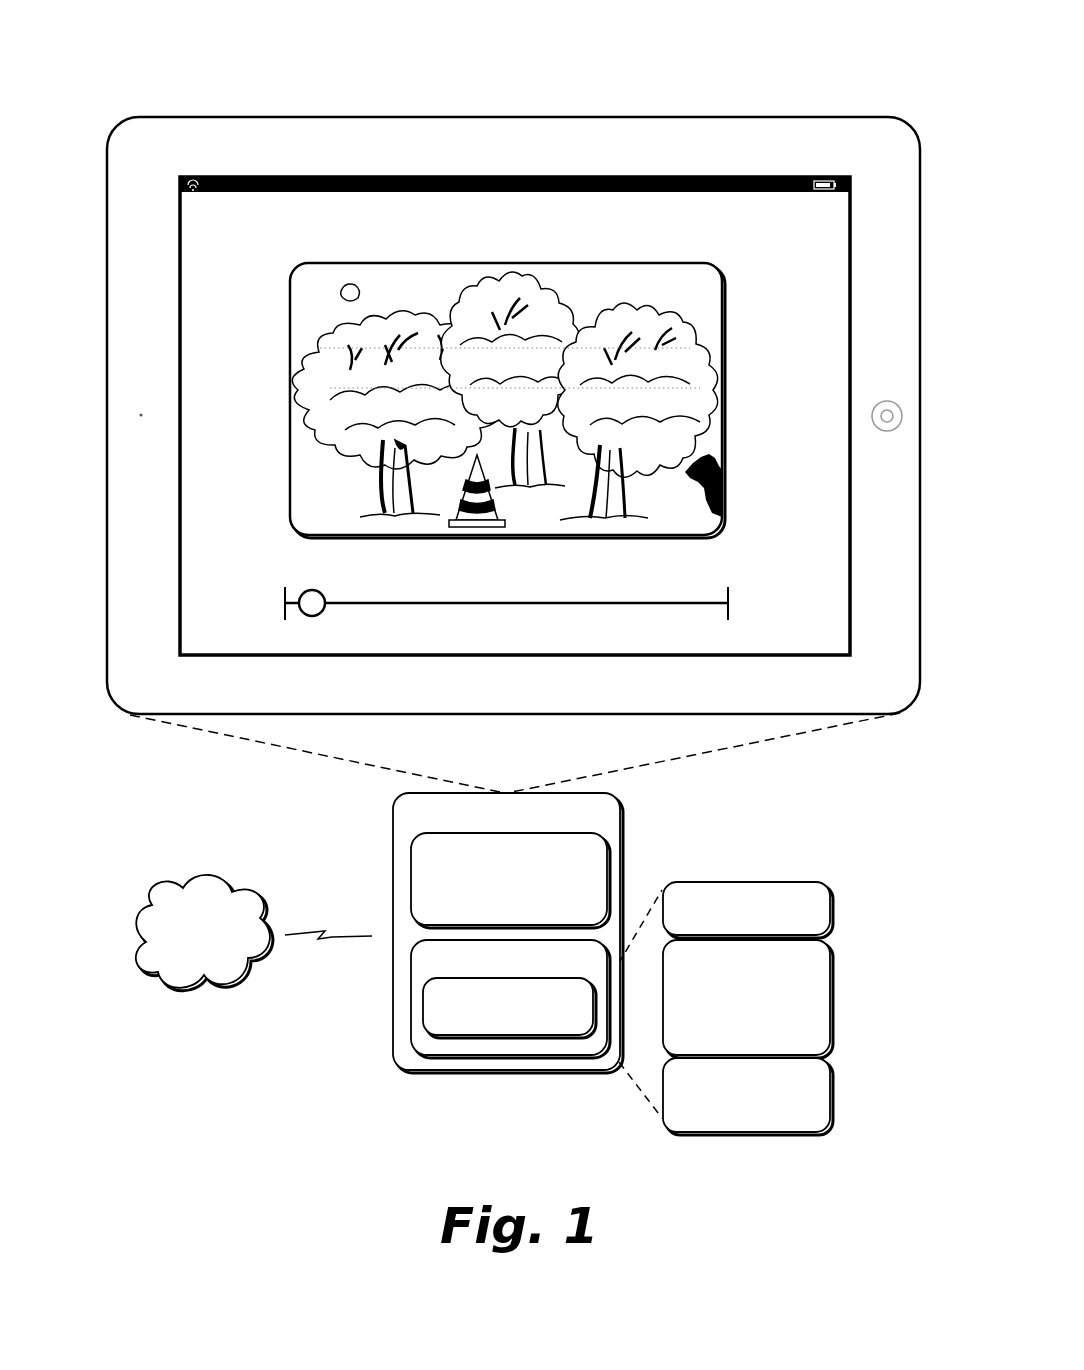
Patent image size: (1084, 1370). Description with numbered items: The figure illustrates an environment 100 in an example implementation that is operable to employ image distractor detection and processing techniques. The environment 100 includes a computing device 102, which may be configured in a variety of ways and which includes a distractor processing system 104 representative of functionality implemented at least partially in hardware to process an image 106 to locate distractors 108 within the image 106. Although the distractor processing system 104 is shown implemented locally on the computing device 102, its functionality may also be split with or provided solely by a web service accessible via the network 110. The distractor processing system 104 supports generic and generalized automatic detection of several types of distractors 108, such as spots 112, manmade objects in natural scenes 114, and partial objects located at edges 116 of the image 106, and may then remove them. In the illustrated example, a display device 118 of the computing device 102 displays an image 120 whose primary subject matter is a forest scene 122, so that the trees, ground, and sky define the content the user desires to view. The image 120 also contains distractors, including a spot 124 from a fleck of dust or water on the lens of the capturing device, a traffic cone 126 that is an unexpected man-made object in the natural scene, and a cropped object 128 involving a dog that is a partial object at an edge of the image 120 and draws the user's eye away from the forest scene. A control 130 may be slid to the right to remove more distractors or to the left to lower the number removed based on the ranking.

The environment 100 is at (222, 66).
The computing device 102 is at (611, 822).
The distractor processing system 104 is at (561, 914).
The image 106 is at (550, 971).
The distractors 108 is at (575, 1016).
The network 110 is at (182, 956).
The spots 112 is at (791, 918).
The manmade objects in natural scenes 114 is at (763, 1040).
The partial objects located at edges 116 is at (802, 1112).
The display device 118 is at (505, 178).
The image 120 is at (510, 265).
The forest scene 122 is at (620, 312).
The spot 124 is at (354, 285).
The traffic cone 126 is at (478, 532).
The cropped object 128 is at (724, 472).
The control 130 is at (318, 591).